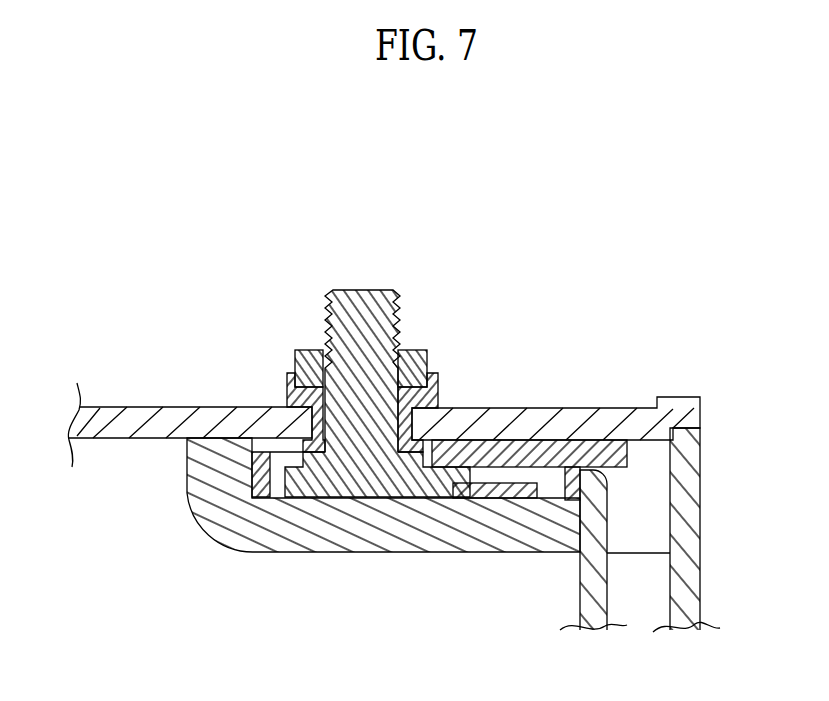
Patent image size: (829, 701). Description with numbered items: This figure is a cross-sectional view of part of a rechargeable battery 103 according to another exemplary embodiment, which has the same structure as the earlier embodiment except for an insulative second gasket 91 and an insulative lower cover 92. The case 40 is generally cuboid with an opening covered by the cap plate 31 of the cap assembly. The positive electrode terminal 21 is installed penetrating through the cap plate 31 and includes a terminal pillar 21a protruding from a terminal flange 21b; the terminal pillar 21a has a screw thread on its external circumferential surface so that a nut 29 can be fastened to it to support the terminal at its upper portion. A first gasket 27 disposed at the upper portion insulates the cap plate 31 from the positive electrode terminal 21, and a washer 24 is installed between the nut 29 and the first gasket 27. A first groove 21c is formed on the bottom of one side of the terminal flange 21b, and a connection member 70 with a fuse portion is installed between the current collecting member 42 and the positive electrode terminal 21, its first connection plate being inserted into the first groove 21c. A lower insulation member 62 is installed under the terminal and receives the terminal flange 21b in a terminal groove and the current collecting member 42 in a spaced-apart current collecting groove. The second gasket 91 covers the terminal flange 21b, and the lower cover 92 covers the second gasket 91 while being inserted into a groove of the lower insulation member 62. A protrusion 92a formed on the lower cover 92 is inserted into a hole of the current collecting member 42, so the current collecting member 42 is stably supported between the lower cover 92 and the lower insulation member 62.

The rechargeable battery 103 is at (567, 231).
The positive electrode terminal 21 is at (359, 421).
The terminal pillar 21a is at (360, 298).
The terminal flange 21b is at (297, 487).
The first groove 21c is at (455, 492).
The washer 24 is at (305, 350).
The first gasket 27 is at (300, 398).
The nut 29 is at (413, 352).
The cap plate 31 is at (601, 423).
The case 40 is at (687, 488).
The current collecting member 42 is at (593, 596).
The lower insulation member 62 is at (373, 530).
The connection member 70 is at (480, 500).
The second gasket 91 is at (425, 428).
The lower cover 92 is at (603, 451).
The protrusion 92a is at (605, 483).